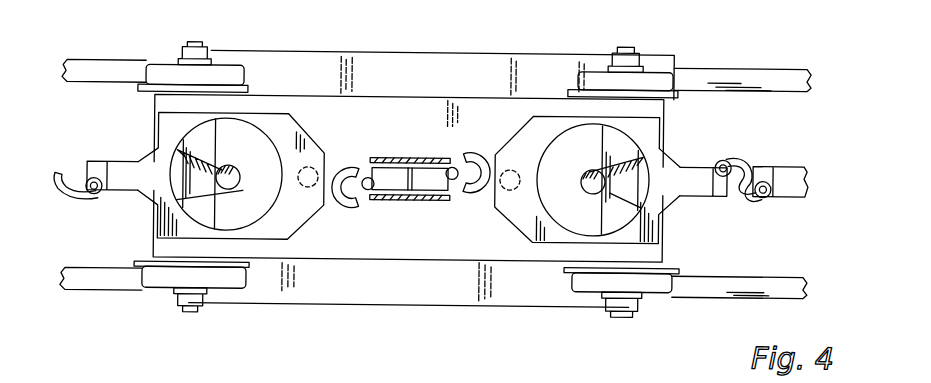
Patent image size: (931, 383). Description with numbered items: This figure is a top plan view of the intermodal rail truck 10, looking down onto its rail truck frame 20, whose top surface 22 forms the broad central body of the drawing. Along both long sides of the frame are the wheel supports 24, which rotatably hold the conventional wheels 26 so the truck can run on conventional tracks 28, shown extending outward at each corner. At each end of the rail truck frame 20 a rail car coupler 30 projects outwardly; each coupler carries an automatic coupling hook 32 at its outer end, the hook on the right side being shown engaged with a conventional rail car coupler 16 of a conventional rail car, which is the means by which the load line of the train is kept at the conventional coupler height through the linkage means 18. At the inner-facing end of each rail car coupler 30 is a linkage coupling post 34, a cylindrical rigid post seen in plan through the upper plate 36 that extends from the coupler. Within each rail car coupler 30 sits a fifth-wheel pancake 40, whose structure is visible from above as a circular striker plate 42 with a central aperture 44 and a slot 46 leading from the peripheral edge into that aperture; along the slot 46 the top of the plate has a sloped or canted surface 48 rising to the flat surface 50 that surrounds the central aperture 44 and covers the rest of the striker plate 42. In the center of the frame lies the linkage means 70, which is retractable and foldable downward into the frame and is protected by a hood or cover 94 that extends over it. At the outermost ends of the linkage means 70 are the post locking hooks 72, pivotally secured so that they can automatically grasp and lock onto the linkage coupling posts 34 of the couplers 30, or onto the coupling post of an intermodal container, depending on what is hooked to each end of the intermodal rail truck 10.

The intermodal rail truck 10 is at (627, 26).
The conventional rail car coupler 16 is at (787, 168).
The linkage means 18 is at (426, 80).
The rail truck frame 20 is at (459, 314).
The top surface 22 is at (351, 128).
The wheel support 24 is at (446, 62).
The conventional wheel 26 is at (231, 76).
The conventional track 28 is at (681, 76).
The rail car coupler 30 is at (116, 196).
The automatic coupling hook 32 is at (66, 200).
The linkage coupling post 34 is at (309, 190).
The upper plate 36 is at (322, 143).
The fifth-wheel pancake 40 is at (252, 235).
The circular striker plate 42 is at (251, 223).
The central aperture 44 is at (226, 165).
The slot 46 is at (193, 142).
The sloped surface 48 is at (241, 192).
The flat surface 50 is at (257, 135).
The linkage means 70 is at (383, 150).
The post locking hook 72 is at (343, 210).
The hood or cover 94 is at (398, 158).